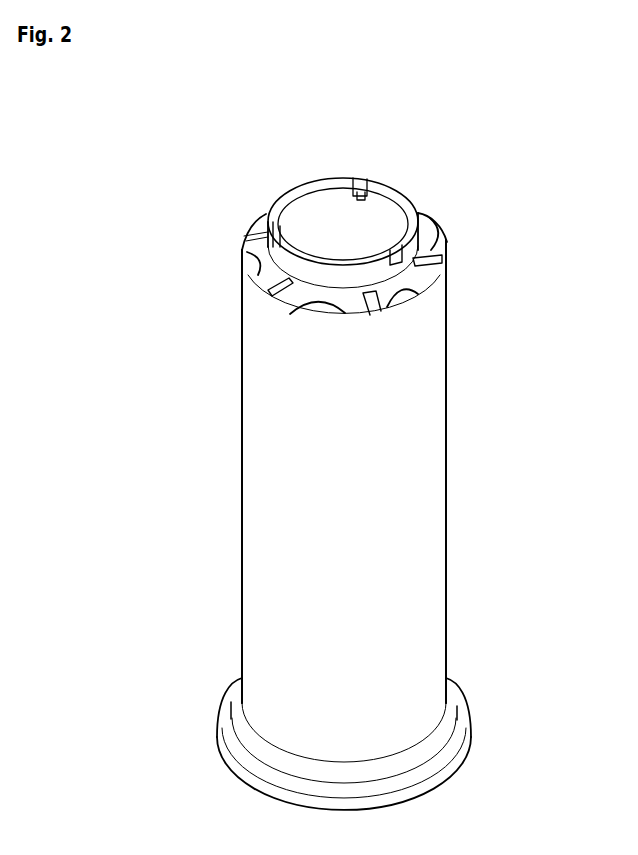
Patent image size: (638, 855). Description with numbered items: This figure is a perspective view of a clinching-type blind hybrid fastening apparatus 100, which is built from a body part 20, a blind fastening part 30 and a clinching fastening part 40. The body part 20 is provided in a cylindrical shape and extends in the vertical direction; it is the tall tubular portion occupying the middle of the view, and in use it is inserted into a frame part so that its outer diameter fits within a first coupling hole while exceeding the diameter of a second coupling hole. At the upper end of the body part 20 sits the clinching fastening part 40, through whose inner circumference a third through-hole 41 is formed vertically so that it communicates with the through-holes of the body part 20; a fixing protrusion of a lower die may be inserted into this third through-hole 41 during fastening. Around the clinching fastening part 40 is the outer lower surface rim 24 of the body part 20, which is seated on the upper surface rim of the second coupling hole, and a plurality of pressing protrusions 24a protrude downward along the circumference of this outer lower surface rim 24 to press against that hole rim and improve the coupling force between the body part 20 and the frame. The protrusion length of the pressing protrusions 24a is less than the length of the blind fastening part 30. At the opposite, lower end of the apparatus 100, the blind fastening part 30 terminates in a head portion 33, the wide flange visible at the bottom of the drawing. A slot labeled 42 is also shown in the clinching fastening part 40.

The clinching-type blind hybrid fastening apparatus 100 is at (161, 190).
The body part 20 is at (460, 510).
The outer lower surface rim 24 is at (443, 228).
The pressing protrusion 24a is at (445, 247).
The blind fastening part 30 is at (478, 722).
The head portion 33 is at (468, 755).
The clinching fastening part 40 is at (410, 188).
The third through-hole 41 is at (305, 223).
The slot 42 is at (361, 183).